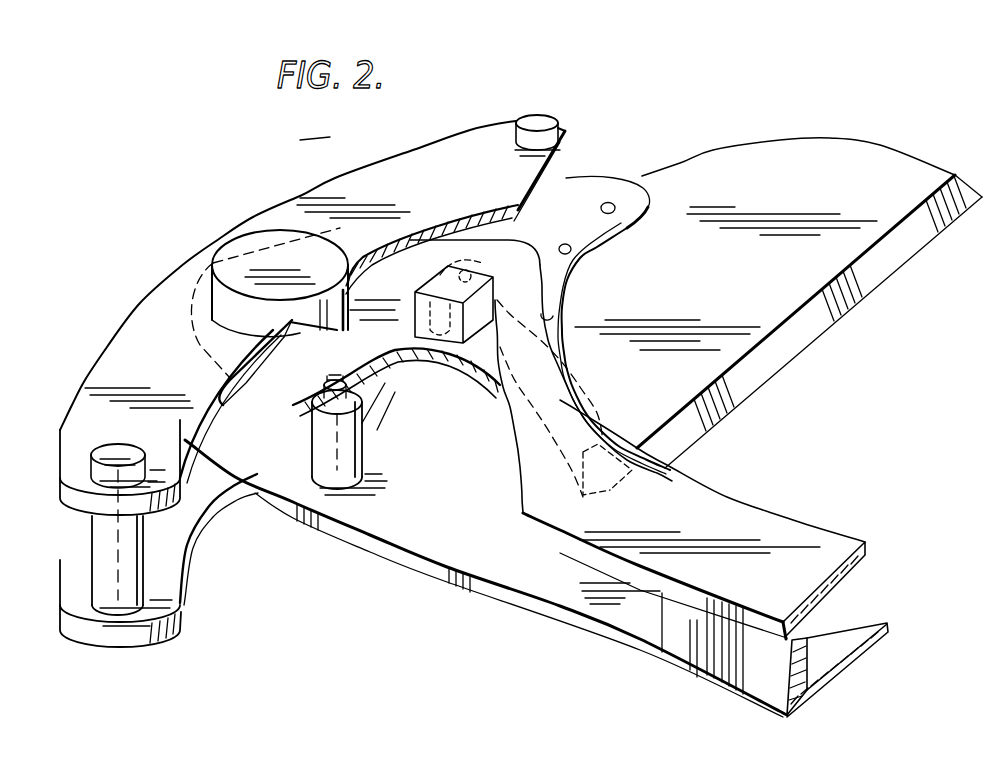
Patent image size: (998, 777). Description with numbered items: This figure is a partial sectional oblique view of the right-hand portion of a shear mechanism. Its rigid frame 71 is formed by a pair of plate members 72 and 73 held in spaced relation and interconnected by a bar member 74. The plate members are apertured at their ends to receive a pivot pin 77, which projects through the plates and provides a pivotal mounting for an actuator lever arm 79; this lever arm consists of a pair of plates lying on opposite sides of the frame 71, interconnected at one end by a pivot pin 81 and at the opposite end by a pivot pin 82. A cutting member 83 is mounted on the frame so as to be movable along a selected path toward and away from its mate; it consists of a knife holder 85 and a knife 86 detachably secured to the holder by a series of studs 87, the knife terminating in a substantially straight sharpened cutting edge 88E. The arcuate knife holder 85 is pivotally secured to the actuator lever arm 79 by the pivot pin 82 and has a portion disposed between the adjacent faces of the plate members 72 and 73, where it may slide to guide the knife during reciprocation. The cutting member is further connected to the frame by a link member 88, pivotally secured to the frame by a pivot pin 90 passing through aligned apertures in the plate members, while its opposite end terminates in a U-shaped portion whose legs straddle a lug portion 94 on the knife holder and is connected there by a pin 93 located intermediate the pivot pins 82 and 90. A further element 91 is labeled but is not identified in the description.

The rigid frame 71 is at (768, 527).
The plate member 72 is at (715, 503).
The plate member 73 is at (665, 663).
The bar member 74 is at (740, 667).
The pivot pin 77 is at (227, 247).
The actuator lever arm 79 is at (83, 340).
The pivot pin 81 is at (100, 542).
The pivot pin 82 is at (538, 122).
The cutting member 83 is at (790, 160).
The knife holder 85 is at (633, 186).
The knife 86 is at (862, 168).
The studs 87 is at (617, 215).
The link member 88 is at (383, 392).
The cutting edge 88E is at (882, 283).
The pivot pin 90 is at (330, 386).
The link 91 is at (293, 398).
The pin 93 is at (458, 276).
The lug portion 94 is at (571, 349).